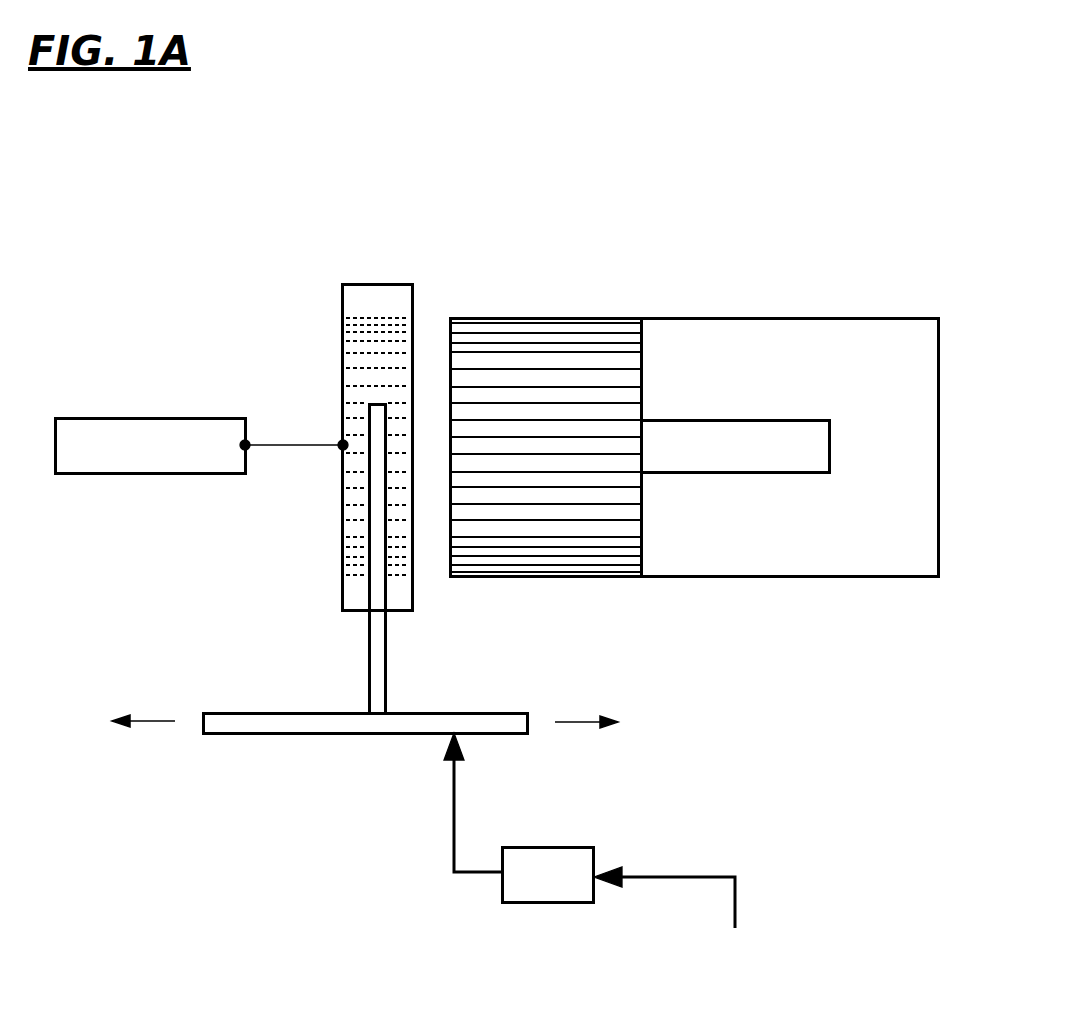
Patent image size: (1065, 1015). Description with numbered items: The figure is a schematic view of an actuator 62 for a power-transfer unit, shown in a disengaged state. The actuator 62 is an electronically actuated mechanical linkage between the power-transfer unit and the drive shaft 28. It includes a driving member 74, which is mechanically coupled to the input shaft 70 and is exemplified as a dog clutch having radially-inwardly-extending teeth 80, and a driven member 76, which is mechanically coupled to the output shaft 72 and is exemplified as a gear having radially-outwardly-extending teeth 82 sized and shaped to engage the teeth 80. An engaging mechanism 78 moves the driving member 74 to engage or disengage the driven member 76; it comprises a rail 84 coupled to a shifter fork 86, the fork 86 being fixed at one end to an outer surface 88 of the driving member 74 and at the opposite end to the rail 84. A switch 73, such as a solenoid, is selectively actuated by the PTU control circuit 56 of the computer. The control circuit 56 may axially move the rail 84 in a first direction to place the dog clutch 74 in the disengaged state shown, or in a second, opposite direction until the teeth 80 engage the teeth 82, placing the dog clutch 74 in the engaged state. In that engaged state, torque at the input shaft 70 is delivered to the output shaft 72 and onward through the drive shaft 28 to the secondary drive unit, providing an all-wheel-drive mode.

The actuator 62 is at (453, 150).
The driving member 74 is at (372, 270).
The outer surface 88 is at (365, 302).
The teeth 80 is at (360, 385).
The shifter fork 86 is at (368, 668).
The rail 84 is at (237, 712).
The engaging mechanism 78 is at (524, 738).
The input shaft 70 is at (202, 446).
The teeth 82 is at (465, 340).
The driven member 76 is at (643, 539).
The drive shaft 28 is at (790, 448).
The output shaft 72 is at (736, 447).
The switch 73 is at (519, 818).
The PTU control circuit 56 is at (670, 914).